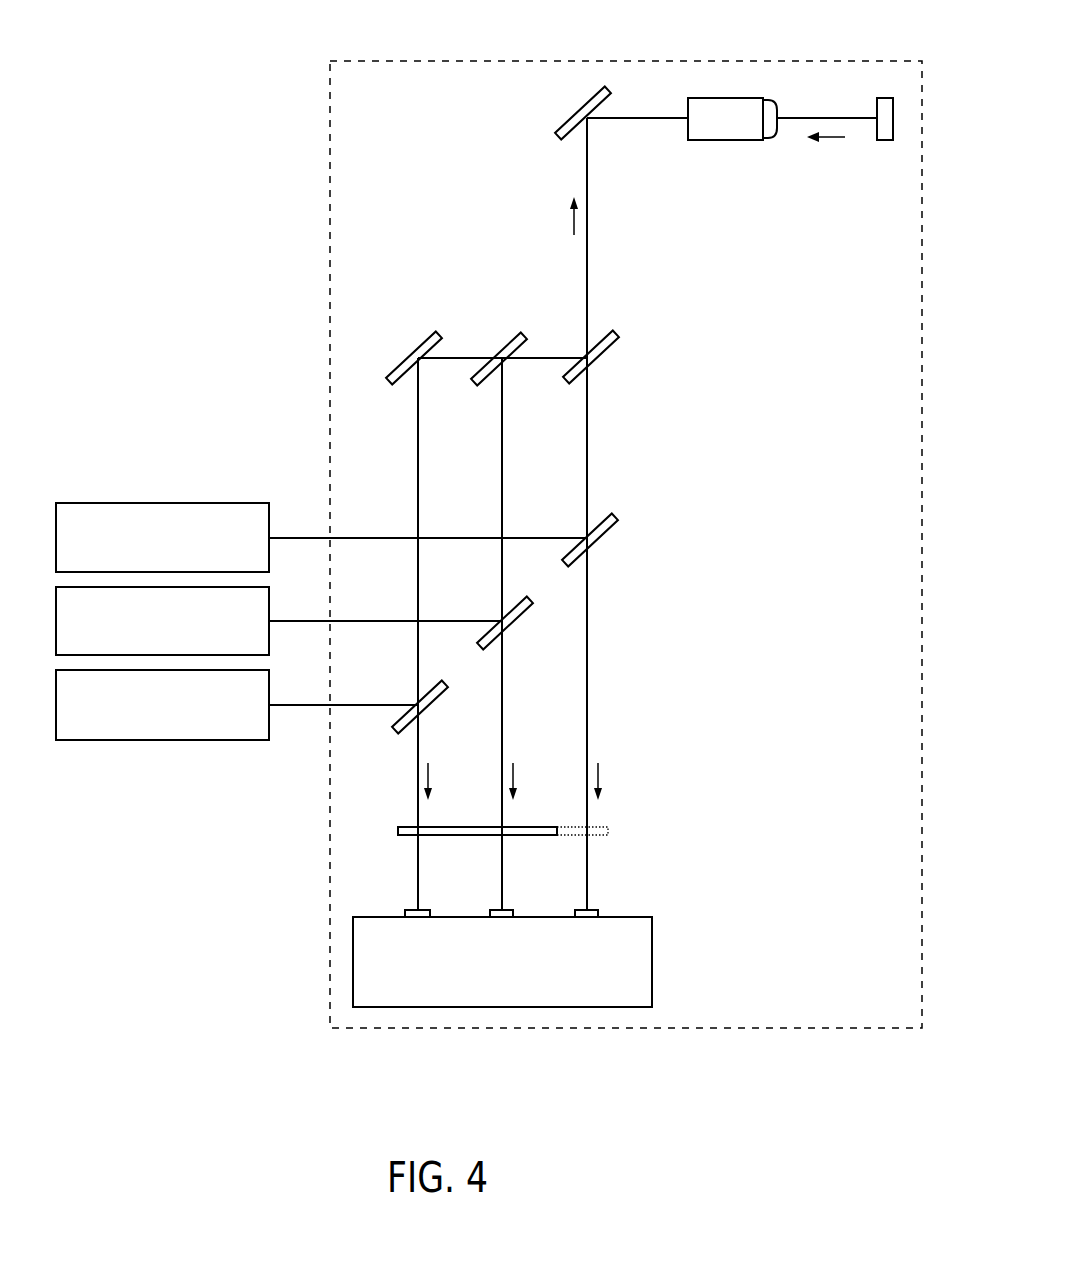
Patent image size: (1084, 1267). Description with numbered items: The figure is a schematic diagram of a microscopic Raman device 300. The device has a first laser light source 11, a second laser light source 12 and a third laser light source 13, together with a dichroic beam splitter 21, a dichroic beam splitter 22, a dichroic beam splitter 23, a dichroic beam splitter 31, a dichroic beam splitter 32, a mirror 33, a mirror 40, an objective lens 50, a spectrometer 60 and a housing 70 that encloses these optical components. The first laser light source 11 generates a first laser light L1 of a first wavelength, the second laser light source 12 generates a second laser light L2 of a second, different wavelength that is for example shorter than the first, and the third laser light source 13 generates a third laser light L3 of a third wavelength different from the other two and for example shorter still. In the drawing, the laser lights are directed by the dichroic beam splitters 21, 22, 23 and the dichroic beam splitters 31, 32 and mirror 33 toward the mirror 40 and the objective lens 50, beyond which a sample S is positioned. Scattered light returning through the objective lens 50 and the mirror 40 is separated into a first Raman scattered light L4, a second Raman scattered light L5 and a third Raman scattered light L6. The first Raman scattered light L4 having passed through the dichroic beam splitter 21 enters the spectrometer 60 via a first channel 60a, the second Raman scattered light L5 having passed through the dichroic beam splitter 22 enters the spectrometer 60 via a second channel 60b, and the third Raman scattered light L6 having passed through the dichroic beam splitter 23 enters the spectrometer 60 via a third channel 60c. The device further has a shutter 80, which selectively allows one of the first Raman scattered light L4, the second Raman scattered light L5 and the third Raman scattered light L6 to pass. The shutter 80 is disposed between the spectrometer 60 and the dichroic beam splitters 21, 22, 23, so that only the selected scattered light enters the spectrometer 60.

The microscopic Raman device 300 is at (278, 22).
The housing 70 is at (330, 192).
The mirror 40 is at (592, 100).
The objective lens 50 is at (722, 100).
The sample S is at (890, 100).
The mirror 33 is at (432, 345).
The dichroic beam splitter 32 is at (517, 345).
The dichroic beam splitter 31 is at (607, 345).
The dichroic beam splitter 21 is at (608, 525).
The dichroic beam splitter 22 is at (523, 607).
The dichroic beam splitter 23 is at (438, 693).
The first laser light source 11 is at (56, 542).
The second laser light source 12 is at (56, 622).
The third laser light source 13 is at (56, 706).
The shutter 80 is at (405, 826).
The spectrometer 60 is at (502, 971).
The first channel 60a is at (575, 912).
The second channel 60b is at (490, 912).
The third channel 60c is at (405, 912).
The first laser light L1 is at (310, 527).
The second laser light L2 is at (310, 610).
The third laser light L3 is at (310, 694).
The first Raman scattered light L4 is at (614, 781).
The second Raman scattered light L5 is at (529, 781).
The third Raman scattered light L6 is at (444, 781).